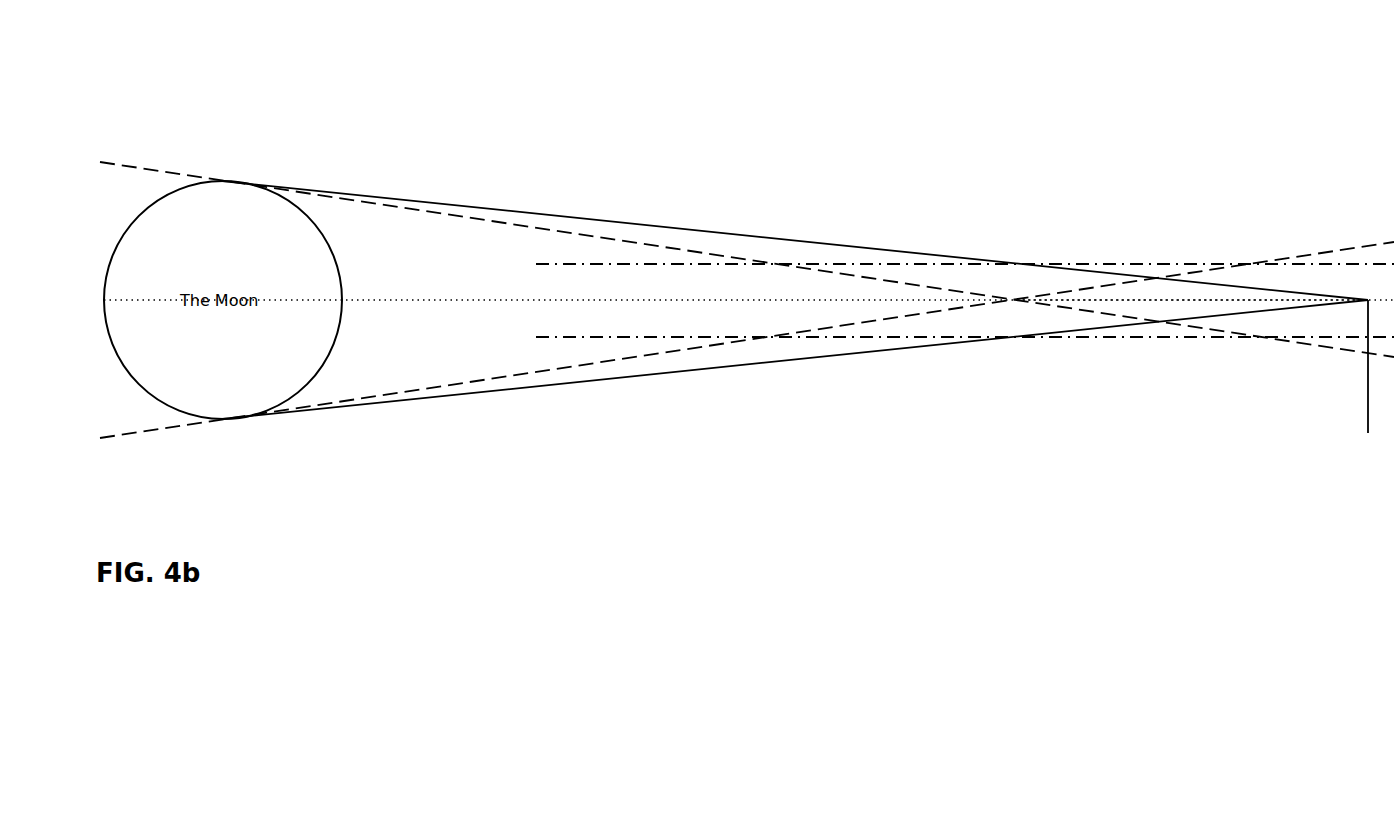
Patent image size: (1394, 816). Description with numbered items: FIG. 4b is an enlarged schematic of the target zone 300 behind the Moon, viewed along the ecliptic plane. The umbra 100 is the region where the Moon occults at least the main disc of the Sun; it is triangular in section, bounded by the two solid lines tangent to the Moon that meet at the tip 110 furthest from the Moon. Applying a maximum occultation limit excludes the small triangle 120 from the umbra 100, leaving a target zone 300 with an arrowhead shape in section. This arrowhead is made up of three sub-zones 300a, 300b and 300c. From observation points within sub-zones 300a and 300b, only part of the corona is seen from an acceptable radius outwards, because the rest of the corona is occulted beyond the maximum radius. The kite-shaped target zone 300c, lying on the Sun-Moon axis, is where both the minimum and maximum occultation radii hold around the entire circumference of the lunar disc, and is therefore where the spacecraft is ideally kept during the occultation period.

The umbra 100 is at (776, 363).
The tip 110 is at (1371, 380).
The small triangle 120 is at (412, 300).
The target zone 300 is at (835, 357).
The sub-zone 300a is at (1034, 288).
The sub-zone 300b is at (991, 322).
The target zone (kite-shaped sub-zone) 300c is at (1170, 300).